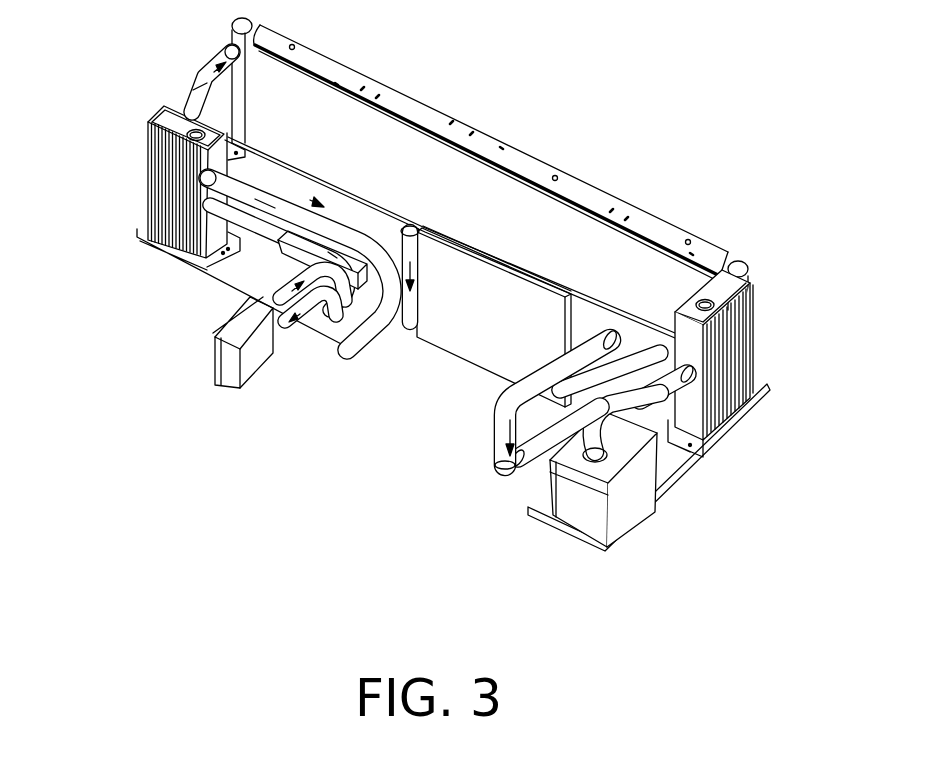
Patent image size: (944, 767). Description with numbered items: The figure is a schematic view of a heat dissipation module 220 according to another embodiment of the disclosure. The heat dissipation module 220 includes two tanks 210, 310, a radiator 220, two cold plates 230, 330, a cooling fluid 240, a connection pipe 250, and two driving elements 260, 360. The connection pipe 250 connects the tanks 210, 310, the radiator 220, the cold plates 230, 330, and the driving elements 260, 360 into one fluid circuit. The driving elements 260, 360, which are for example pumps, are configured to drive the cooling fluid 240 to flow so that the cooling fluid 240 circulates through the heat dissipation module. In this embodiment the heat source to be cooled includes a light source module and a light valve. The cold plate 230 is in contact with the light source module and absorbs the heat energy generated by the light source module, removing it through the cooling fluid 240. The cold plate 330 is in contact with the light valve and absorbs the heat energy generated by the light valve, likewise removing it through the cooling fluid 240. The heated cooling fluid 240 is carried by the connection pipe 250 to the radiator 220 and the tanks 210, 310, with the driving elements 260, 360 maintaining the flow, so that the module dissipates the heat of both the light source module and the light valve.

The heat dissipation module 220 is at (528, 198).
The tank 210 is at (740, 333).
The cold plate 230 is at (462, 342).
The cooling fluid 240 is at (680, 385).
The connection pipe 250 is at (598, 437).
The driving element 260 is at (580, 507).
The tank 310 is at (155, 193).
The cold plate 330 is at (217, 362).
The driving element 360 is at (357, 267).